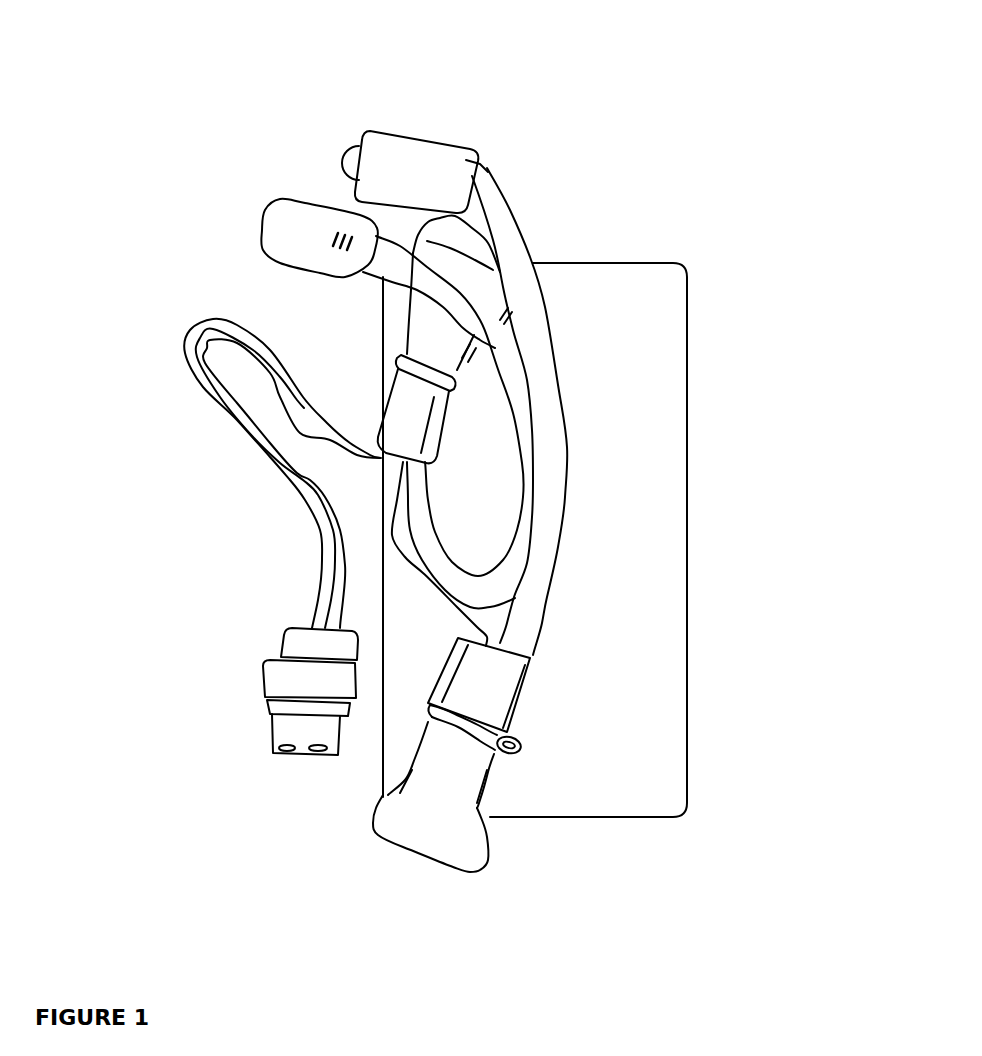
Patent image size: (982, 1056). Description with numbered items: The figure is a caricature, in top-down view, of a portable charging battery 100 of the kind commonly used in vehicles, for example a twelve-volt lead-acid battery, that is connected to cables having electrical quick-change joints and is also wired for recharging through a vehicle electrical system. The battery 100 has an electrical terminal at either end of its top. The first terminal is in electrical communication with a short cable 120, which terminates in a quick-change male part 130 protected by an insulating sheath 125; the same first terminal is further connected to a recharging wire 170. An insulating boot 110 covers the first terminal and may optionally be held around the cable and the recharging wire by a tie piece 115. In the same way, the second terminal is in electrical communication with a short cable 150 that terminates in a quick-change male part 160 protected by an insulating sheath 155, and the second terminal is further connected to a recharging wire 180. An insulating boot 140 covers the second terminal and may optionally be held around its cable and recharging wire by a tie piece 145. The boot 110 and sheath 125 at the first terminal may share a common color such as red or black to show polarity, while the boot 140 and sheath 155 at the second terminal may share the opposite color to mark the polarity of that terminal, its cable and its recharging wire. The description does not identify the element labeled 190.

The battery 100 is at (650, 290).
The insulating boot 110 is at (447, 827).
The tie piece 115 is at (512, 760).
The short cable 120 is at (493, 205).
The insulating sheath 125 is at (437, 150).
The quick-change male part 130 is at (340, 160).
The insulating boot 140 is at (442, 340).
The tie piece 145 is at (402, 357).
The short cable 150 is at (458, 305).
The insulating sheath 155 is at (307, 227).
The quick-change male part 160 is at (249, 226).
The recharging wire 170 is at (307, 613).
The recharging wire 180 is at (340, 568).
The connector 190 is at (290, 728).